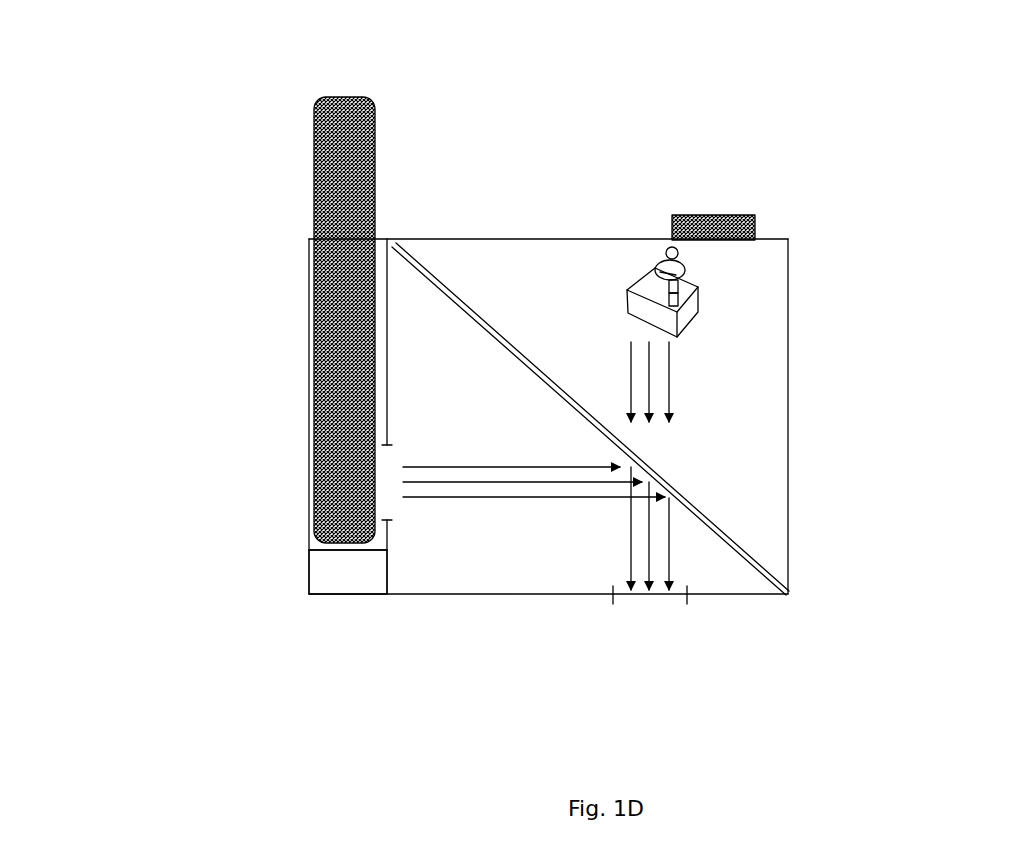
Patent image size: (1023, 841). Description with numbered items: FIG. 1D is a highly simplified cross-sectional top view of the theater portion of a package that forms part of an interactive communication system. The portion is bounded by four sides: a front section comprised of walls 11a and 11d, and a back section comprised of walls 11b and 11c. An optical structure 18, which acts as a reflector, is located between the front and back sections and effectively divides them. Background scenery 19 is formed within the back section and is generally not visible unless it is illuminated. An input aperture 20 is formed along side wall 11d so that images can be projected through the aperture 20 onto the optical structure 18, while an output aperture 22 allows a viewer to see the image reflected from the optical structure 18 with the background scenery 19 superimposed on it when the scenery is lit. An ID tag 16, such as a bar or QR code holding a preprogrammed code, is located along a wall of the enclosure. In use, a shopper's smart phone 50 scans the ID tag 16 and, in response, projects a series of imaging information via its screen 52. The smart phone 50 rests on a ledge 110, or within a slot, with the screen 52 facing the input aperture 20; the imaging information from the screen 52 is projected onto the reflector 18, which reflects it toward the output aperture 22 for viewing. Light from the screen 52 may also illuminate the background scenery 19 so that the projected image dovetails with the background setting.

The side wall 11a is at (467, 600).
The side wall 11b is at (788, 410).
The side wall 11c is at (514, 238).
The side wall 11d is at (389, 305).
The ID tag 16 is at (720, 207).
The optical structure 18 is at (475, 310).
The background scenery 19 is at (700, 285).
The input aperture 20 is at (395, 502).
The output aperture 22 is at (661, 606).
The smart phone 50 is at (312, 118).
The screen 52 is at (340, 478).
The ledge 110 is at (357, 582).